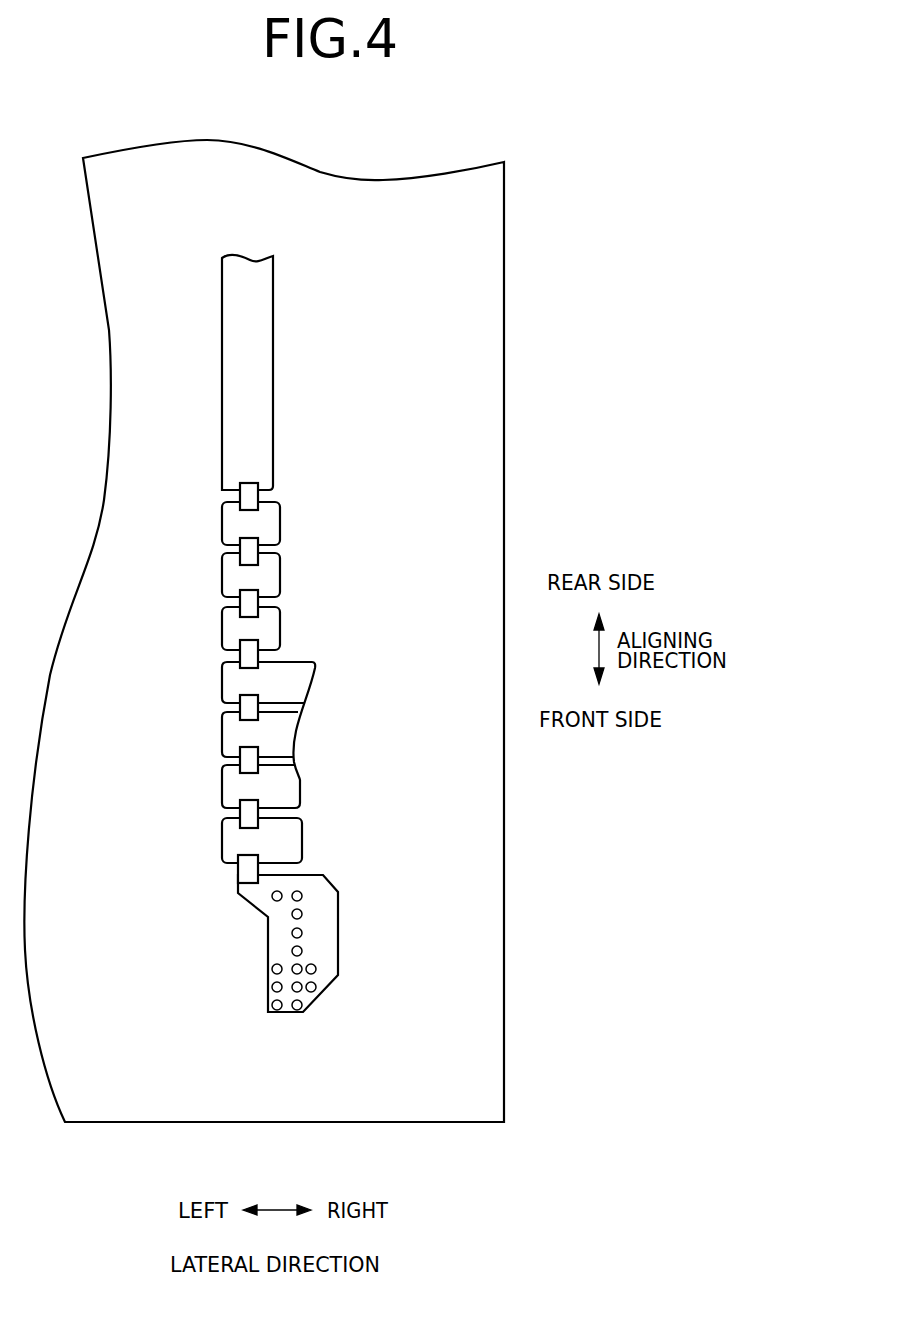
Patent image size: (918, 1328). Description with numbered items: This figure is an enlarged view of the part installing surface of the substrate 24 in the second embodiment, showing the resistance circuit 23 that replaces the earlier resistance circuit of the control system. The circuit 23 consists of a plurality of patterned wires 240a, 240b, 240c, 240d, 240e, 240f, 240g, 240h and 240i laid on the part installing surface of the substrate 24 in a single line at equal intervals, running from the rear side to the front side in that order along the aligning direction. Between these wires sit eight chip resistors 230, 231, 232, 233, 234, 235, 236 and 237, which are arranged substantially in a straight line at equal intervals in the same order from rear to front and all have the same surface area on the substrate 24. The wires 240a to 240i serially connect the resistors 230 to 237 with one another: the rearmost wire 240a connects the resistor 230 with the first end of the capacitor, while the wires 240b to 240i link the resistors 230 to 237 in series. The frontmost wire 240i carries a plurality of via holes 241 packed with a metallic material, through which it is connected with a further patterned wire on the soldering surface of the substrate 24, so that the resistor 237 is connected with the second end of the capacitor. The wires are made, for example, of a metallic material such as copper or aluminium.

The printed circuit board 24 is at (477, 218).
The resistance circuit 23 is at (305, 417).
The resistor 230 is at (257, 497).
The resistor 231 is at (262, 549).
The resistor 232 is at (262, 602).
The resistor 233 is at (262, 657).
The resistor 234 is at (262, 712).
The resistor 235 is at (262, 759).
The resistor 236 is at (262, 816).
The resistor 237 is at (262, 870).
The patterned wire 240a is at (233, 384).
The patterned wire 240b is at (233, 526).
The patterned wire 240c is at (233, 580).
The patterned wire 240d is at (235, 630).
The patterned wire 240e is at (235, 682).
The patterned wire 240f is at (235, 730).
The patterned wire 240g is at (235, 790).
The patterned wire 240h is at (238, 840).
The patterned wire 240i is at (256, 975).
The via holes 241 is at (312, 993).